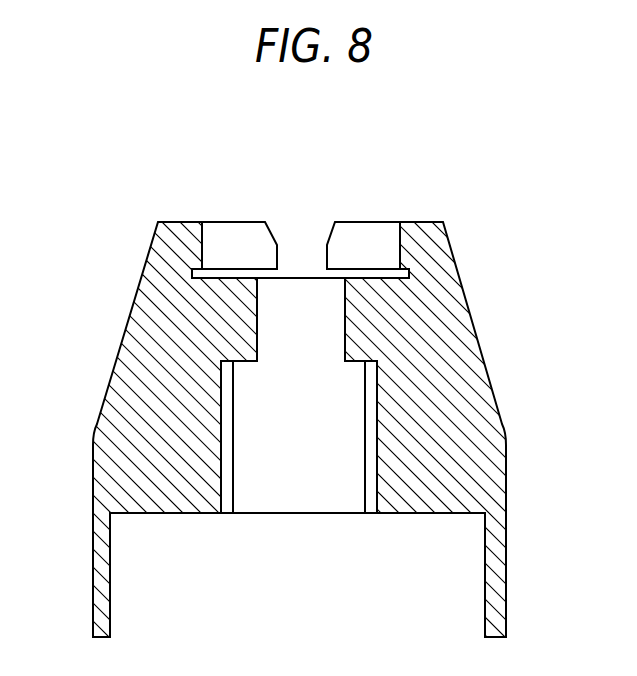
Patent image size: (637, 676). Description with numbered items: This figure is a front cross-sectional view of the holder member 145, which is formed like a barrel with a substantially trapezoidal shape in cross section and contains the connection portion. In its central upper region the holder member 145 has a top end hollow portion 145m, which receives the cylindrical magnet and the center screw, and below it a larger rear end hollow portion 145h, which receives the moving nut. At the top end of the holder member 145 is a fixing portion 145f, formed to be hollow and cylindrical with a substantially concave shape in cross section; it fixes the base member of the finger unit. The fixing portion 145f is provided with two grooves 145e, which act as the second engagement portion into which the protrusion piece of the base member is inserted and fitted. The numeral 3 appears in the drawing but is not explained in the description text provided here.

The housing base 3 is at (485, 427).
The holder member 145 is at (428, 327).
The grooves 145e is at (307, 277).
The fixing portion 145f is at (367, 268).
The top end hollow portion 145m is at (288, 328).
The rear end hollow portion 145h is at (233, 405).